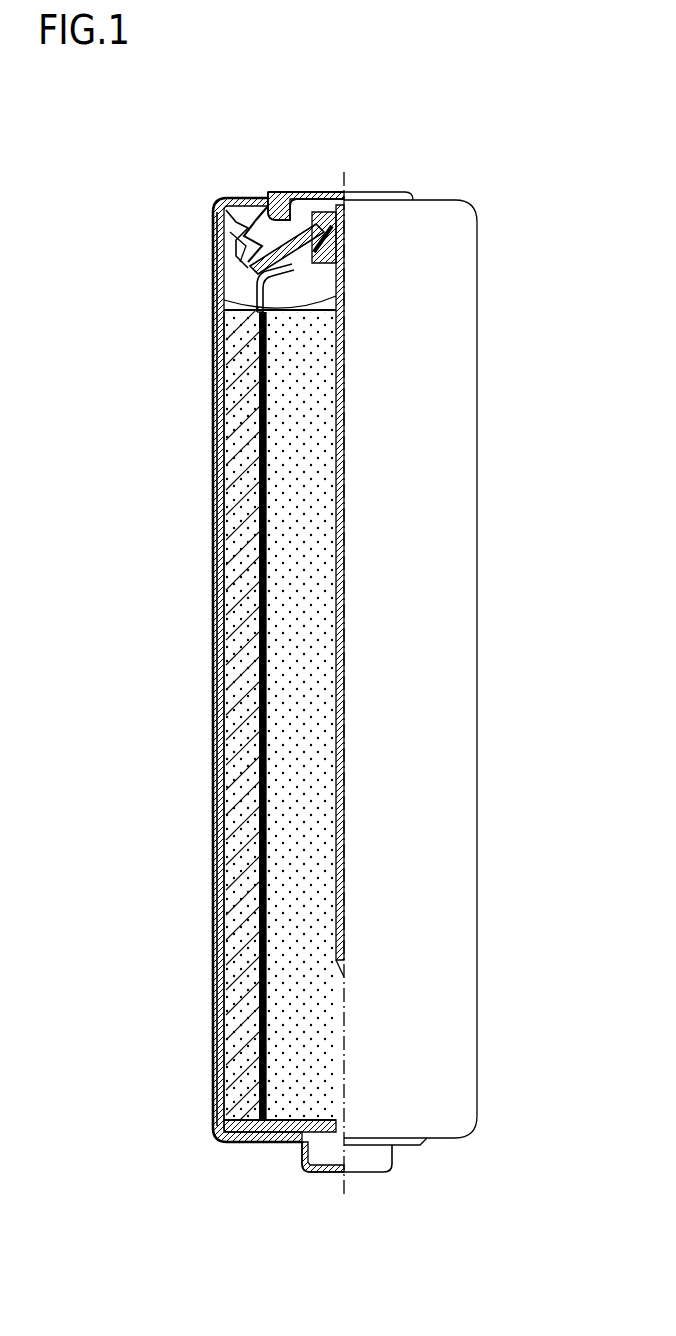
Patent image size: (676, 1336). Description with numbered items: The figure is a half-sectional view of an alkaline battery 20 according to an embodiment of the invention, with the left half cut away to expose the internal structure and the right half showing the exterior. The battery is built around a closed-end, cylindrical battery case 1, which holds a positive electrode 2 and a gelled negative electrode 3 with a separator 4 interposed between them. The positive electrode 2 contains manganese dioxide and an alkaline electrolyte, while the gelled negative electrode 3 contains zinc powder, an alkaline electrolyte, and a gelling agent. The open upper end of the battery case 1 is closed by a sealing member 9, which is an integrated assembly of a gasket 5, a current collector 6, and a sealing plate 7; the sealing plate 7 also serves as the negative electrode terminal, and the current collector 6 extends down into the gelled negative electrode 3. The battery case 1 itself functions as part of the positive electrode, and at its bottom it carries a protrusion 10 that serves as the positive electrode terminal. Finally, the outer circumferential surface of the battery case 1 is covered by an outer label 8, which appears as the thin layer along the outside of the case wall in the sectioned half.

The battery case 1 is at (218, 653).
The positive electrode 2 is at (242, 913).
The gelled negative electrode 3 is at (300, 560).
The separator 4 is at (250, 715).
The gasket 5 is at (252, 260).
The current collector 6 is at (330, 300).
The sealing plate 7 is at (303, 193).
The outer label 8 is at (217, 987).
The sealing member 9 is at (165, 142).
The protrusion 10 is at (318, 1173).
The alkaline battery 20 is at (511, 176).